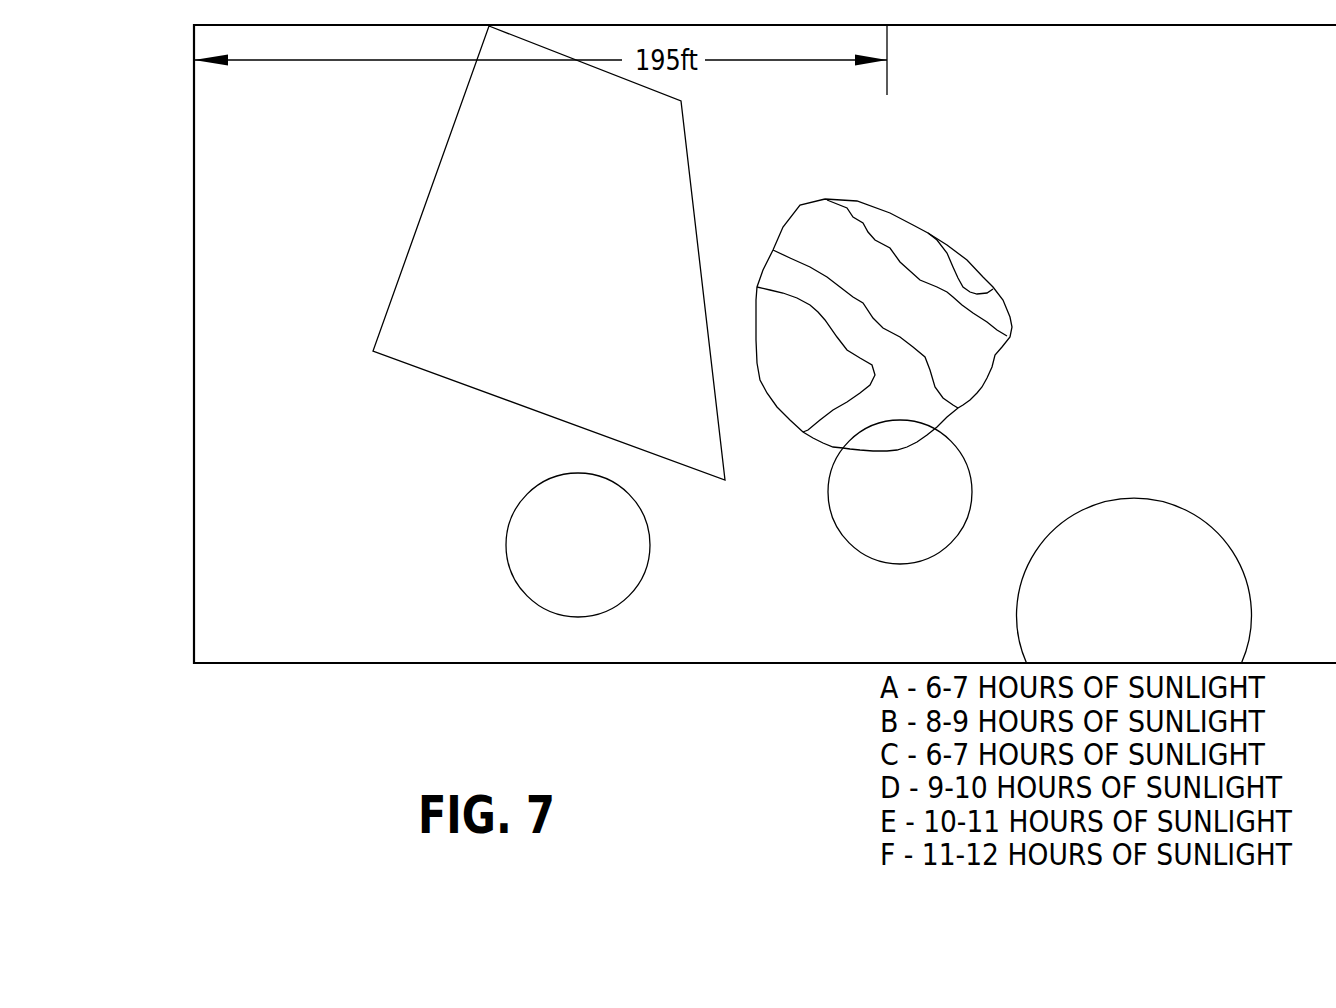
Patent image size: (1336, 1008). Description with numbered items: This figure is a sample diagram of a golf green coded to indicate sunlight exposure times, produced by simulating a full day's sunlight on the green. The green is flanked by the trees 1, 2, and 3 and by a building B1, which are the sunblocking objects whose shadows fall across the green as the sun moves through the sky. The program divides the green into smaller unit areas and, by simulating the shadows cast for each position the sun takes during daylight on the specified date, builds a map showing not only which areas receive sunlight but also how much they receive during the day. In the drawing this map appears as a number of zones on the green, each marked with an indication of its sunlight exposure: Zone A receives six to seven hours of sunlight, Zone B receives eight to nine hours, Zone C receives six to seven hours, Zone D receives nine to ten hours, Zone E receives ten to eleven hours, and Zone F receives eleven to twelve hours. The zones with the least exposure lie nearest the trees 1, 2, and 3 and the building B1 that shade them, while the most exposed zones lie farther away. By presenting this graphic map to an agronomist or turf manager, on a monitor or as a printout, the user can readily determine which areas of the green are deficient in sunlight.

The tree 1 is at (1134, 580).
The tree 2 is at (578, 545).
The tree 3 is at (900, 492).
The building B1 is at (549, 253).
The Zone A is at (816, 359).
The Zone B is at (865, 329).
The Zone C is at (890, 437).
The Zone D is at (938, 320).
The Zone E is at (917, 268).
The Zone F is at (960, 263).